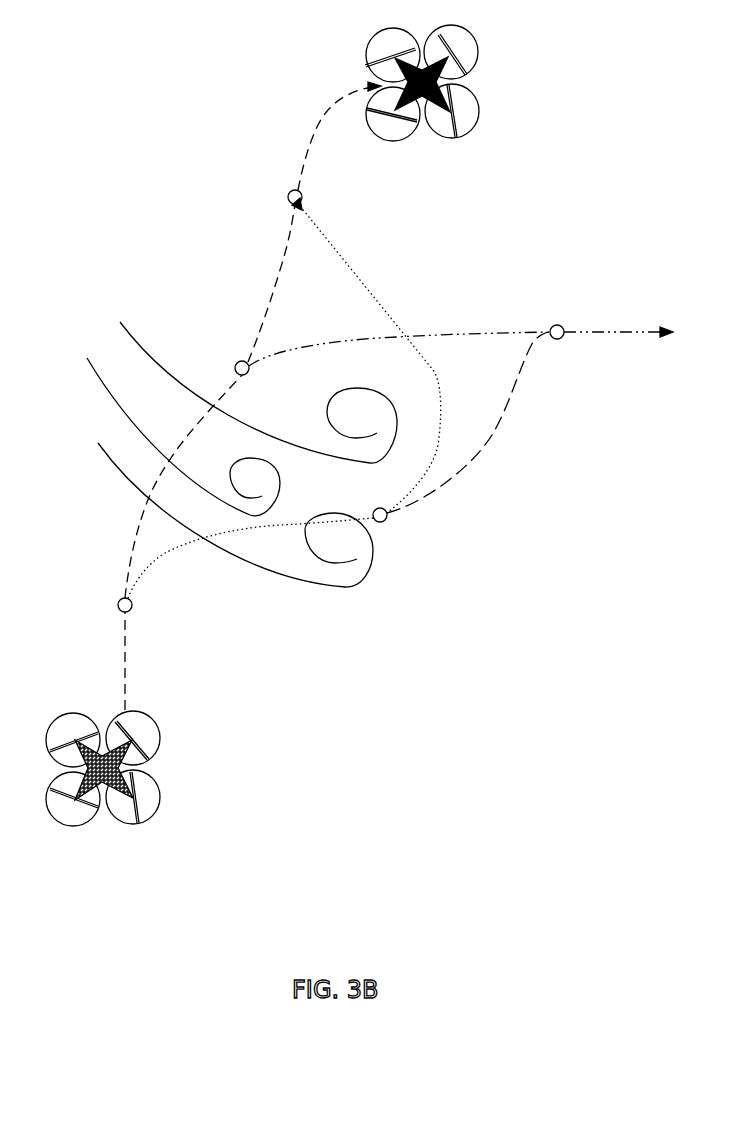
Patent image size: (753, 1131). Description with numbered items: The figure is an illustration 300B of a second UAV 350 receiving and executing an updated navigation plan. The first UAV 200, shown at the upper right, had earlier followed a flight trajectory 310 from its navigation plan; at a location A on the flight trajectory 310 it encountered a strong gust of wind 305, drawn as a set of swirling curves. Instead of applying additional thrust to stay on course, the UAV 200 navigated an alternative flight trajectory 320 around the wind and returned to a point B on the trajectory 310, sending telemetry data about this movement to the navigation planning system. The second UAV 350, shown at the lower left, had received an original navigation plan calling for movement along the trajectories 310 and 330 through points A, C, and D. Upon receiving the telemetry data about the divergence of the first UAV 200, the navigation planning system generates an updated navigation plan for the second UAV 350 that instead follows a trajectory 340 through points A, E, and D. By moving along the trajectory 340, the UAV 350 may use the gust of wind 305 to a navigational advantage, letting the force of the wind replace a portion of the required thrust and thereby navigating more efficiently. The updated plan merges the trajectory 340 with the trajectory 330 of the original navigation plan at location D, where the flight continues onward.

The illustration 300B is at (170, 145).
The UAV 200 is at (470, 82).
The second UAV 350 is at (150, 767).
The gust of wind 305 is at (173, 427).
The flight trajectory 310 is at (274, 287).
The alternative flight trajectory 320 is at (330, 248).
The trajectory 330 is at (450, 330).
The trajectory 340 is at (495, 450).
The location A is at (118, 603).
The point B is at (288, 195).
The point C is at (250, 372).
The location D is at (564, 336).
The point E is at (387, 518).